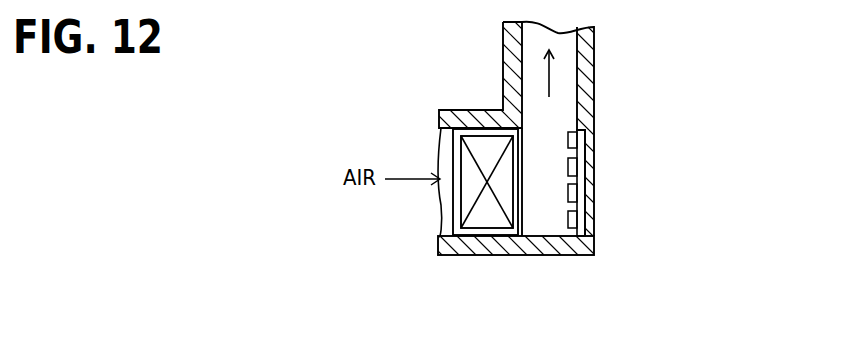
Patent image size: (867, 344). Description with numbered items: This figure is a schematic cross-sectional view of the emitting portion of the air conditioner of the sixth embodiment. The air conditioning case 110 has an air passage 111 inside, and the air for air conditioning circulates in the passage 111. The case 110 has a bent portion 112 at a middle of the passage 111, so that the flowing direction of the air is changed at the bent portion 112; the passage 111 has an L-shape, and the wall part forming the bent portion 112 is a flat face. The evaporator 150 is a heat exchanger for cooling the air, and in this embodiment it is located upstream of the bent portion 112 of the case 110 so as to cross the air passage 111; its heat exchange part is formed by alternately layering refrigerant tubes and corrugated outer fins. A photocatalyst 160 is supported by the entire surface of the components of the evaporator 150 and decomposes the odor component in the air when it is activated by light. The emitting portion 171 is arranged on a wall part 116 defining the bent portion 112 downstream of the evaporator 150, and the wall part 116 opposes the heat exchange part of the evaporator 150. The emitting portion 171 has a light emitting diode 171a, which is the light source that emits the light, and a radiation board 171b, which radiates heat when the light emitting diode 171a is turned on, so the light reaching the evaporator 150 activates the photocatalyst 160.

The air conditioning case 110 is at (455, 110).
The air passage 111 is at (553, 108).
The bent portion 112 is at (567, 258).
The wall part 116 is at (594, 210).
The evaporator 150 is at (478, 218).
The photocatalyst 160 is at (503, 233).
The emitting portion 171 is at (668, 175).
The light emitting diode 171a is at (574, 162).
The radiation board 171b is at (578, 174).